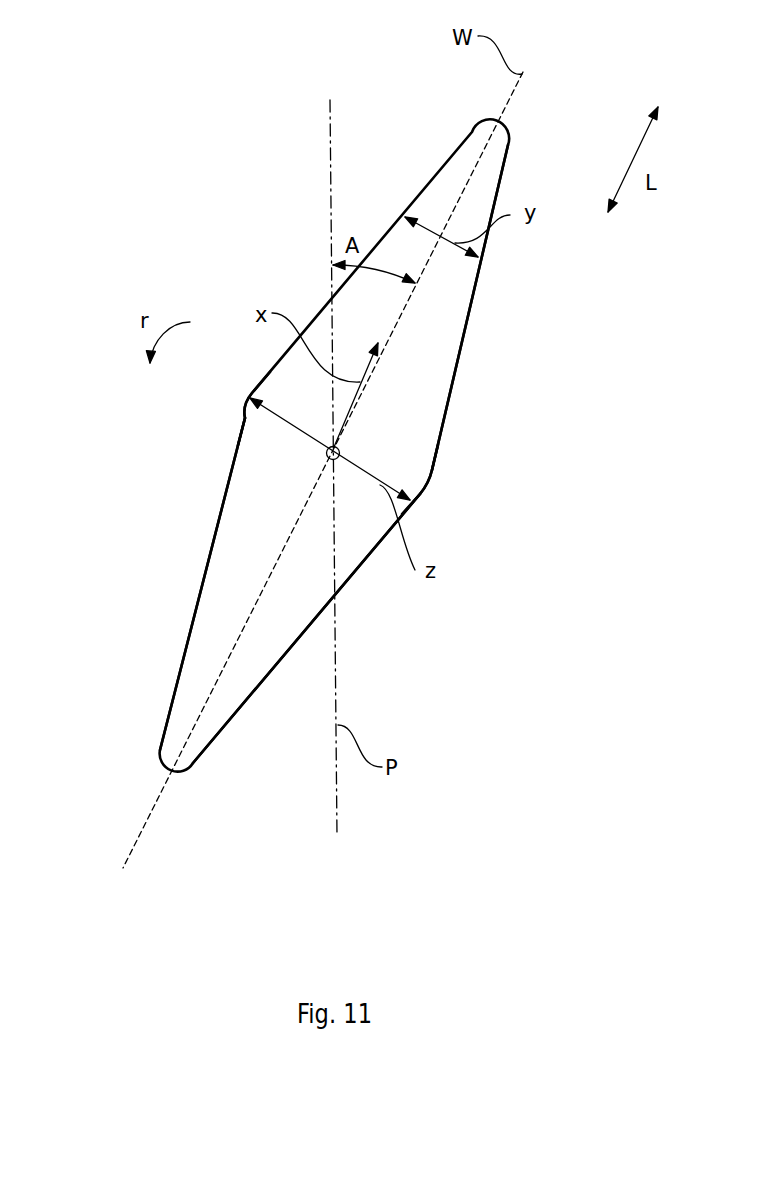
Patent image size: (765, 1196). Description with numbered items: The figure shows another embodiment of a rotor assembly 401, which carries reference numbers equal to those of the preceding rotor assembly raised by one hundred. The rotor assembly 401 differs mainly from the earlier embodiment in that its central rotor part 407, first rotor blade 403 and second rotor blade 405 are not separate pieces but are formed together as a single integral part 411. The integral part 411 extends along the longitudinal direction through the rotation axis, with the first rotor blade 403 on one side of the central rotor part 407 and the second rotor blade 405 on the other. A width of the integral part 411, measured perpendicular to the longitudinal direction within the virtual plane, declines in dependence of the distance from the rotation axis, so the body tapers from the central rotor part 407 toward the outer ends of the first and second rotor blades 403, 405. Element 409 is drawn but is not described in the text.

The rotor assembly 401 is at (158, 160).
The first rotor blade 403 is at (178, 670).
The second rotor blade 405 is at (468, 320).
The central rotor part 407 is at (236, 440).
The second corner 409 is at (340, 453).
The integral part 411 is at (538, 445).